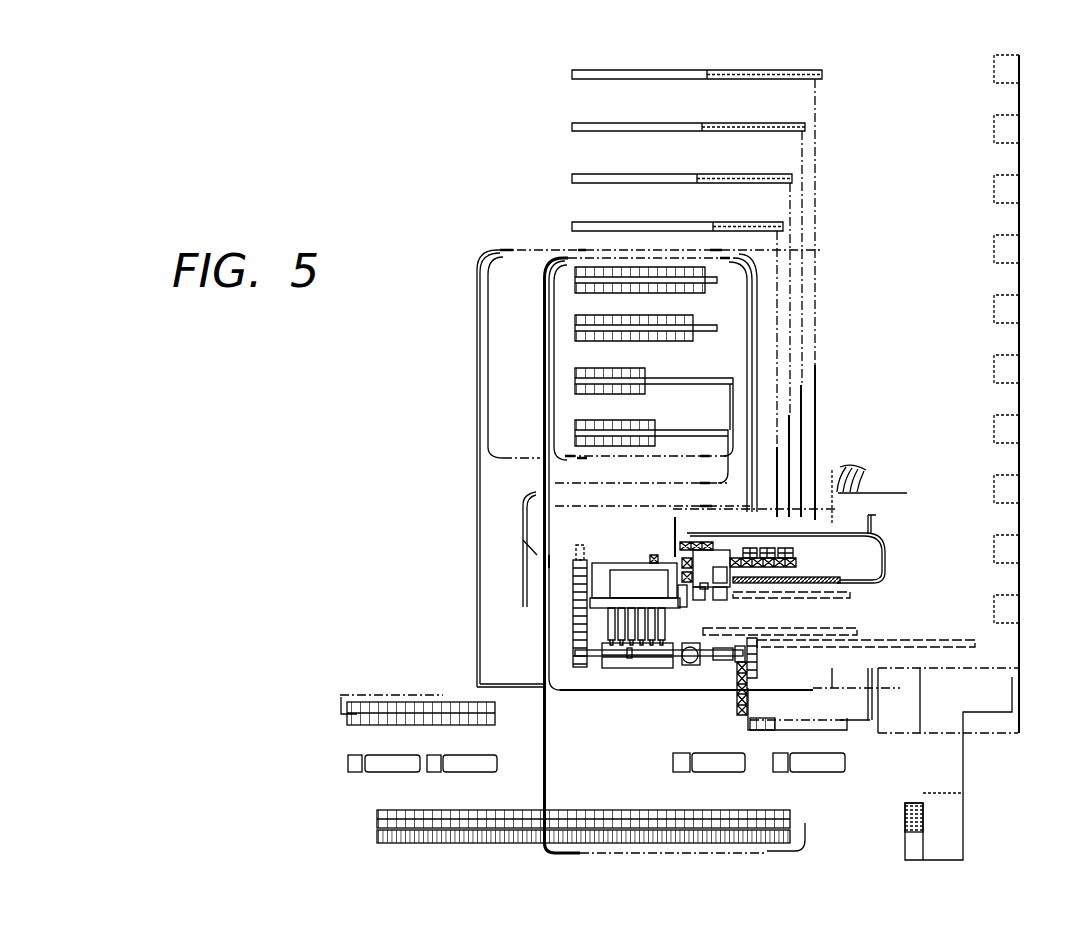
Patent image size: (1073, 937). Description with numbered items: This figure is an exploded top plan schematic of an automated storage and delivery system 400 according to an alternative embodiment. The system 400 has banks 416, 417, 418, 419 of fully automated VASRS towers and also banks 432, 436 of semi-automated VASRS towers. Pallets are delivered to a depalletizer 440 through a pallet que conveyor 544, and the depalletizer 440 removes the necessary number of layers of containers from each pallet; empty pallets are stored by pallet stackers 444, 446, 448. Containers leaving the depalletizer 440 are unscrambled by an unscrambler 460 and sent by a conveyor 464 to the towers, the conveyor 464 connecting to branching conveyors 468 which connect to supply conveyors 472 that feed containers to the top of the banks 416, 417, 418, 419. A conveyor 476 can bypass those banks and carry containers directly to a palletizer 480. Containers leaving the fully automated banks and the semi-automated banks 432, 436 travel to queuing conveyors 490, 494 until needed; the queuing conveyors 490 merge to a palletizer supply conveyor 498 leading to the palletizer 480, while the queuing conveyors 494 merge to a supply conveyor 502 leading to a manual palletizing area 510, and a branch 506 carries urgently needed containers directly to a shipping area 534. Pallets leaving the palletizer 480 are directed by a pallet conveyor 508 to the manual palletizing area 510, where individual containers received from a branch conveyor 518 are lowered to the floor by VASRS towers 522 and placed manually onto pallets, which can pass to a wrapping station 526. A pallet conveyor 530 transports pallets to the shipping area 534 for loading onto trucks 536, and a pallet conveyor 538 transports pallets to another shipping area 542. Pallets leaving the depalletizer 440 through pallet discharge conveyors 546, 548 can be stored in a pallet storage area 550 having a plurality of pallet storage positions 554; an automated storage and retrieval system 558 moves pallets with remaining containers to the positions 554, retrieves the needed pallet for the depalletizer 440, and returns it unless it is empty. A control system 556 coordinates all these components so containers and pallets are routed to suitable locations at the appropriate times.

The system 400 is at (374, 400).
The bank of VASRS towers 416 is at (575, 272).
The bank of VASRS towers 417 is at (575, 320).
The bank of VASRS towers 418 is at (575, 372).
The bank of VASRS towers 419 is at (575, 422).
The bank of semi-automated VASRS towers 432 is at (390, 722).
The bank of semi-automated VASRS towers 436 is at (437, 841).
The depalletizer 440 is at (728, 548).
The pallet stacker 444 is at (757, 546).
The pallet stacker 446 is at (777, 550).
The pallet stacker 448 is at (780, 576).
The unscrambler 460 is at (785, 553).
The conveyor 464 is at (1019, 553).
The branching conveyors 468 is at (800, 418).
The supply conveyors 472 is at (585, 68).
The conveyor 476 is at (886, 538).
The palletizer 480 is at (525, 585).
The queuing conveyors 490 is at (480, 405).
The queuing conveyors 494 is at (549, 424).
The palletizer supply conveyor 498 is at (762, 262).
The supply conveyor 502 is at (752, 252).
The branch 506 is at (528, 548).
The pallet conveyor 508 is at (573, 622).
The manual palletizing area 510 is at (633, 668).
The branch conveyor 518 is at (573, 592).
The VASRS towers 522 is at (573, 632).
The wrapping station 526 is at (693, 668).
The pallet conveyor 530 is at (742, 716).
The shipping area 534 is at (645, 758).
The trucks 536 is at (450, 773).
The pallet conveyor 538 is at (758, 663).
The shipping area 542 is at (951, 726).
The pallet que conveyor 544 is at (700, 540).
The pallet discharge conveyor 546 is at (680, 560).
The pallet discharge conveyor 548 is at (680, 575).
The pallet storage area 550 is at (858, 612).
The pallet storage positions 554 is at (773, 599).
The control system 556 is at (639, 585).
The automated storage and retrieval system (ASRS) 558 is at (688, 604).